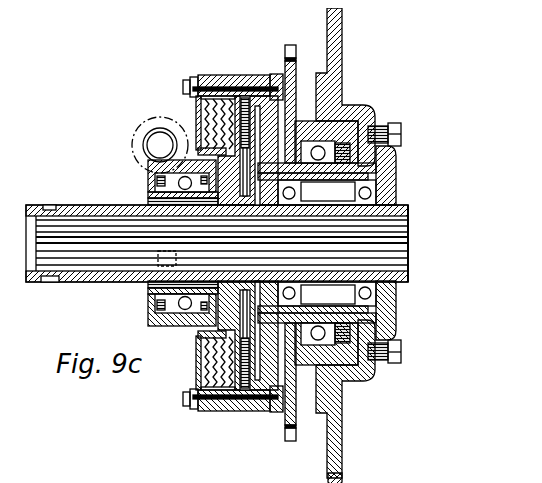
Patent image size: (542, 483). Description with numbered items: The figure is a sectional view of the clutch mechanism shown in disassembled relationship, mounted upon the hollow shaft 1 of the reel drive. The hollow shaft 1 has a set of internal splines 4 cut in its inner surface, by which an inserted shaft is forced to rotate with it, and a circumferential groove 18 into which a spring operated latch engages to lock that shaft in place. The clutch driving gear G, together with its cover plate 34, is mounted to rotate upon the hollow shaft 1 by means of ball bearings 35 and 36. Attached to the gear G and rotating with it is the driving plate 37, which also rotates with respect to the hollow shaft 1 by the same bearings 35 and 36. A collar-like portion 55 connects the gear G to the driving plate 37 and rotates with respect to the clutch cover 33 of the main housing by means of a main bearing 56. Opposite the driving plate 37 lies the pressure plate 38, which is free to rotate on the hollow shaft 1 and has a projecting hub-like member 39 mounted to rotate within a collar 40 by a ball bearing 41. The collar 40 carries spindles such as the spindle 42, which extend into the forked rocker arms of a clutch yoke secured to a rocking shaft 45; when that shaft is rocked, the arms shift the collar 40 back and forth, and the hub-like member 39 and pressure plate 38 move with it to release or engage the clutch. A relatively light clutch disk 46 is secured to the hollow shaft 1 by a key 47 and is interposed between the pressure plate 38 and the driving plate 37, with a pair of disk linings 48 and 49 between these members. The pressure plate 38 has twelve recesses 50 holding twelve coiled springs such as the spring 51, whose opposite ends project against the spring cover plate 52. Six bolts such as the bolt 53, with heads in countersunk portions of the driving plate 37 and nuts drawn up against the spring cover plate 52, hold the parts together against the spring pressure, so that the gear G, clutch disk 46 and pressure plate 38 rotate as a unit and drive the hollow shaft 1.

The hollow shaft 1 is at (68, 272).
The internal splines 4 is at (406, 240).
The circumferential groove 18 is at (37, 198).
The clutch cover 33 is at (283, 72).
The cover plate 34 is at (386, 160).
The ball bearing 35 is at (351, 187).
The ball bearing 36 is at (288, 185).
The driving plate 37 is at (268, 67).
The pressure plate 38 is at (195, 68).
The hub-like member 39 is at (140, 165).
The collar 40 is at (160, 137).
The ball bearing 41 is at (150, 173).
The spindle 42 is at (152, 260).
The rocking shaft 45 is at (152, 137).
The clutch disk 46 is at (140, 186).
The key 47 is at (140, 193).
The disk lining 48 is at (222, 67).
The disk lining 49 is at (253, 67).
The recess 50 is at (210, 88).
The coiled spring 51 is at (190, 105).
The spring cover plate 52 is at (193, 118).
The bolt 53 is at (240, 80).
The collar-like portion 55 is at (372, 170).
The main bearing 56 is at (306, 120).
The clutch driving gear G is at (334, 24).